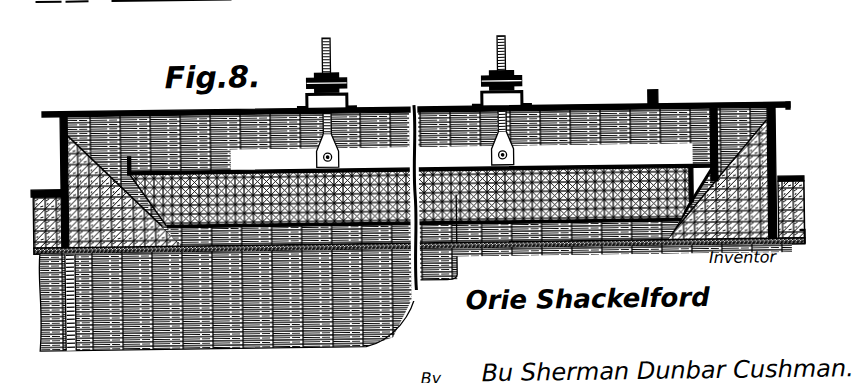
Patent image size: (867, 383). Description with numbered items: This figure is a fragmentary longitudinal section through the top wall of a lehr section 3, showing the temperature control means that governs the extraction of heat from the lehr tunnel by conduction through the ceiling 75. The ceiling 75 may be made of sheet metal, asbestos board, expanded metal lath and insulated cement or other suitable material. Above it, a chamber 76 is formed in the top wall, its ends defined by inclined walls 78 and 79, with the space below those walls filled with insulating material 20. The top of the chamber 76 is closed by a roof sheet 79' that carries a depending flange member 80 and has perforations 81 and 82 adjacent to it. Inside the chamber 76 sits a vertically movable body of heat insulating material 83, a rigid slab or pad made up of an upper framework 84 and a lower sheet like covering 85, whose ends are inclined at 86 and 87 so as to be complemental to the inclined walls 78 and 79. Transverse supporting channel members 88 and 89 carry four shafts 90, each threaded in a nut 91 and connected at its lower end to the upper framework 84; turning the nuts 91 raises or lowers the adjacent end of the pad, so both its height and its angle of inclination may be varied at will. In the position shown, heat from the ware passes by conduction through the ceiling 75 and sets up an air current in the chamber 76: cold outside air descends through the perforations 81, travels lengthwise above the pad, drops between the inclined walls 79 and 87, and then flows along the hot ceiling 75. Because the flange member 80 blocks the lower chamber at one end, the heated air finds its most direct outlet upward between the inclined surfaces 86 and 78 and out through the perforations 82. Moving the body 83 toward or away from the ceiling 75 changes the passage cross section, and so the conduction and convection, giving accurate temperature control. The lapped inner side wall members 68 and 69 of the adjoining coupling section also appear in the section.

The lehr section 3 is at (588, 107).
The insulating material 20 is at (90, 253).
The inner side wall member 68 is at (47, 346).
The inner side wall member 69 is at (73, 326).
The ceiling 75 is at (549, 232).
The chamber 76 is at (514, 234).
The inclined wall 78 is at (757, 250).
The inclined wall 79 is at (50, 182).
The roof sheet 79' is at (237, 87).
The depending flange member 80 is at (711, 130).
The perforations 81 is at (660, 106).
The perforations 82 is at (745, 112).
The body of heat insulating material 83 is at (456, 276).
The upper framework 84 is at (263, 160).
The lower sheet like covering 85 is at (612, 232).
The inclined end 86 is at (672, 233).
The inclined end 87 is at (154, 240).
The transverse supporting channel member 88 is at (528, 104).
The transverse supporting channel member 89 is at (349, 104).
The shaft 90 is at (329, 48).
The nut 91 is at (334, 80).